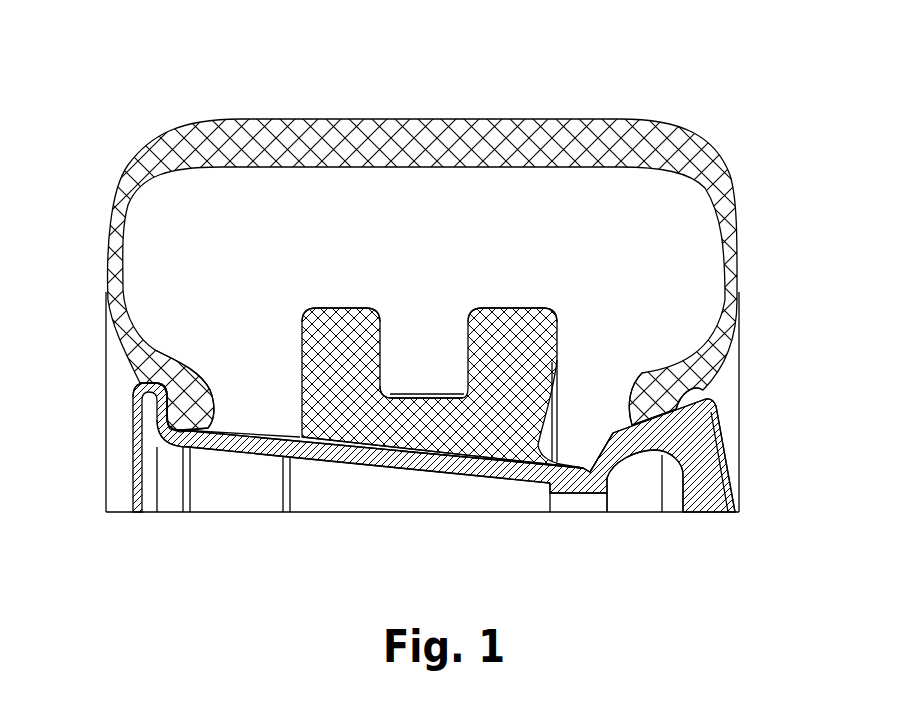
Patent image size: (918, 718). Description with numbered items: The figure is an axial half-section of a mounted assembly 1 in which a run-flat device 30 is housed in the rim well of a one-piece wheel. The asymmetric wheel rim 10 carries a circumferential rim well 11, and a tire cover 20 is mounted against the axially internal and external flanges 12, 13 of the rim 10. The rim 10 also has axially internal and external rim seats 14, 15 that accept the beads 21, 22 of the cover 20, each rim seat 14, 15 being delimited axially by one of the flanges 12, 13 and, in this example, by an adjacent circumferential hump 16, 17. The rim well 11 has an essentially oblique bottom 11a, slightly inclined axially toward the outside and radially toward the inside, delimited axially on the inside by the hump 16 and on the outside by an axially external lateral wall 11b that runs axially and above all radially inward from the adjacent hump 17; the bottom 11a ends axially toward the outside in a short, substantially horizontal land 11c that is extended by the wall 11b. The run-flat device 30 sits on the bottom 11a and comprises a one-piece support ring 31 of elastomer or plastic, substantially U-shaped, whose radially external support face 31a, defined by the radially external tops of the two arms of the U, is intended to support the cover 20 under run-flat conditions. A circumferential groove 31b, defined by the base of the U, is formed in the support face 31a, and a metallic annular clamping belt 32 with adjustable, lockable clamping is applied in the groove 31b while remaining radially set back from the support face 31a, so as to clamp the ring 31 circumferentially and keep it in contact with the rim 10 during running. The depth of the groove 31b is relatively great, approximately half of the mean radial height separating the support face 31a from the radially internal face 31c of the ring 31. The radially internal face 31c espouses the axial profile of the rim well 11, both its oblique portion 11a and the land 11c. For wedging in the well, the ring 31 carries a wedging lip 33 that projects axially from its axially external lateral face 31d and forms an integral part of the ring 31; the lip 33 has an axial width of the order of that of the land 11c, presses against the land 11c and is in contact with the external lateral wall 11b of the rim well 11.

The mounted assembly 1 is at (613, 66).
The wheel rim 10 is at (238, 454).
The rim well 11 is at (416, 471).
The bottom of the rim well 11a is at (458, 468).
The axially external lateral wall 11b is at (605, 493).
The land 11c is at (580, 492).
The axially internal flange 12 is at (135, 388).
The axially external flange 13 is at (705, 400).
The axially internal rim seat 14 is at (182, 447).
The axially external rim seat 15 is at (651, 452).
The circumferential hump 16 is at (228, 430).
The circumferential hump 17 is at (618, 430).
The tire cover 20 is at (668, 123).
The bead 21 is at (210, 388).
The bead 22 is at (648, 378).
The run-flat device 30 is at (478, 262).
The support ring 31 is at (293, 304).
The support face 31a is at (352, 307).
The circumferential groove 31b is at (387, 396).
The radially internal face 31c is at (366, 450).
The axially external lateral face 31d is at (553, 372).
The annular clamping belt 32 is at (430, 396).
The wedging lip 33 is at (562, 472).